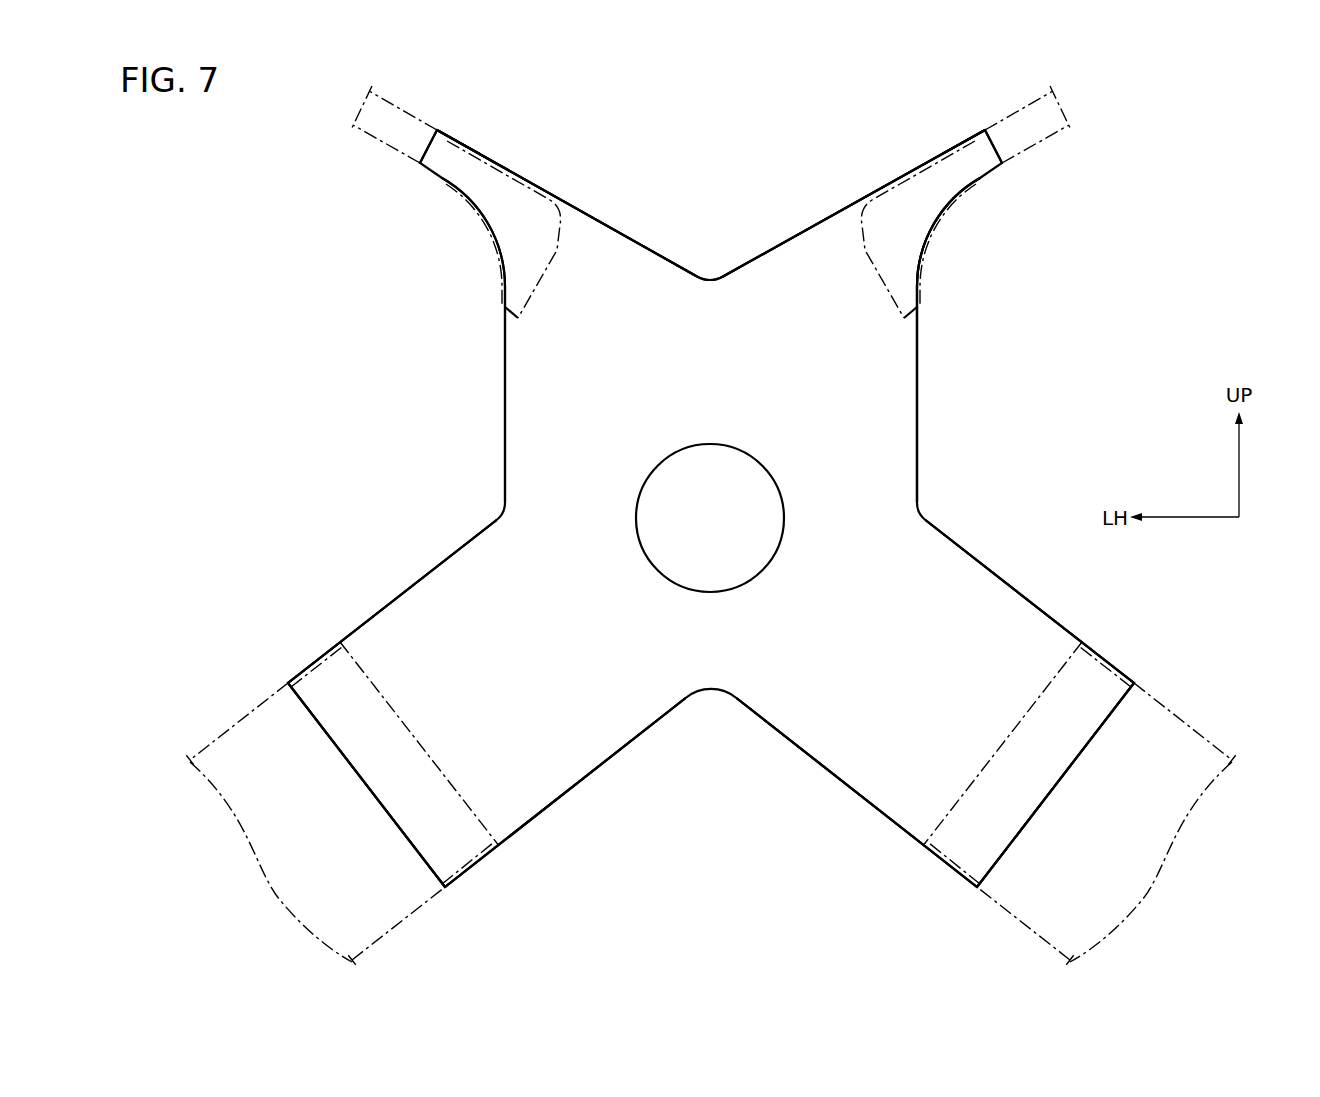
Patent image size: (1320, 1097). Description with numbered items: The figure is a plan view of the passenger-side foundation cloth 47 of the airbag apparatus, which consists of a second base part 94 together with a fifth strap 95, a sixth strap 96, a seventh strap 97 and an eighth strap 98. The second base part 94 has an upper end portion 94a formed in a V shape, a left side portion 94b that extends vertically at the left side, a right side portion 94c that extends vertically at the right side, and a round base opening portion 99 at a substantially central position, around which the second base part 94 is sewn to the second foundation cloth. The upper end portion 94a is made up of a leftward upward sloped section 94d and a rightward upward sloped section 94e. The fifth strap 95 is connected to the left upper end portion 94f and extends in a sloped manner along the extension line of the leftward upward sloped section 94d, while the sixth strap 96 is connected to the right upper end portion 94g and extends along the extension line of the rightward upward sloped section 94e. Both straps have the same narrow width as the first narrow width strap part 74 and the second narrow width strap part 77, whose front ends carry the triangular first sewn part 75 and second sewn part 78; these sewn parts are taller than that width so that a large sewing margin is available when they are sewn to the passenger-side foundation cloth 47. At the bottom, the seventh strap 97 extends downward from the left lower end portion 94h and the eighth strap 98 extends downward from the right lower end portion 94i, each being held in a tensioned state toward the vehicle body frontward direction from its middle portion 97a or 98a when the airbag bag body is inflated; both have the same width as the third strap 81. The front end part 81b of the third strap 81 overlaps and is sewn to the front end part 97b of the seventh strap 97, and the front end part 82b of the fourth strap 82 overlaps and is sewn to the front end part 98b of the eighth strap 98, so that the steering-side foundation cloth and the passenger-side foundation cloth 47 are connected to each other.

The passenger-side foundation cloth 47 is at (919, 341).
The first narrow width strap part 74 is at (358, 128).
The first sewn part 75 is at (543, 273).
The second narrow width strap part 77 is at (1064, 128).
The second sewn part 78 is at (879, 273).
The third strap 81 is at (227, 729).
The front end part of the third strap 81b is at (433, 760).
The fourth strap 82 is at (1195, 729).
The front end part of the fourth strap 82b is at (989, 760).
The second base part 94 is at (882, 368).
The upper end portion 94a is at (625, 149).
The left side portion 94b is at (505, 397).
The right side portion 94c is at (917, 397).
The leftward upward sloped section 94d is at (638, 242).
The rightward upward sloped section 94e is at (782, 242).
The left upper end portion 94f is at (522, 222).
The right upper end portion 94g is at (900, 222).
The left lower end portion 94h is at (597, 610).
The right lower end portion 94i is at (825, 610).
The fifth strap 95 is at (447, 156).
The sixth strap 96 is at (975, 156).
The seventh strap 97 is at (548, 765).
The middle portion of the seventh strap 97a is at (430, 617).
The front end part of the seventh strap 97b is at (380, 773).
The eighth strap 98 is at (874, 765).
The middle portion of the eighth strap 98a is at (992, 617).
The front end part of the eighth strap 98b is at (1042, 773).
The base opening portion 99 is at (637, 506).